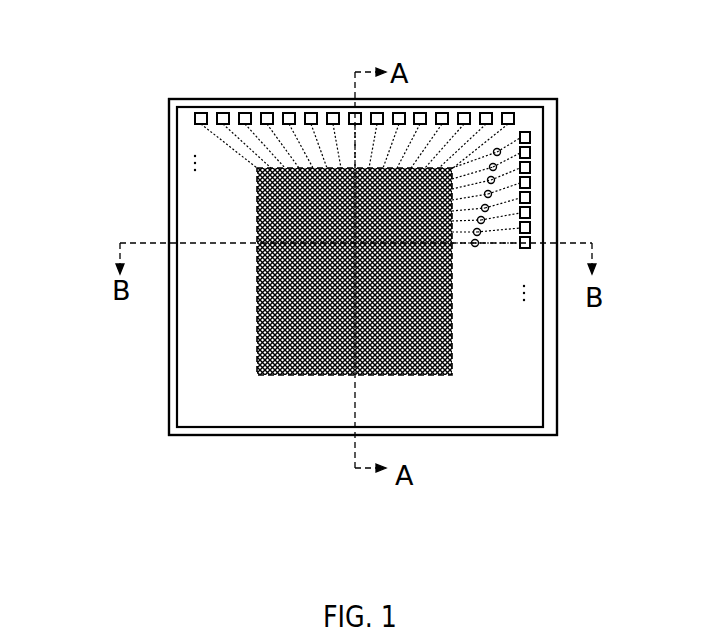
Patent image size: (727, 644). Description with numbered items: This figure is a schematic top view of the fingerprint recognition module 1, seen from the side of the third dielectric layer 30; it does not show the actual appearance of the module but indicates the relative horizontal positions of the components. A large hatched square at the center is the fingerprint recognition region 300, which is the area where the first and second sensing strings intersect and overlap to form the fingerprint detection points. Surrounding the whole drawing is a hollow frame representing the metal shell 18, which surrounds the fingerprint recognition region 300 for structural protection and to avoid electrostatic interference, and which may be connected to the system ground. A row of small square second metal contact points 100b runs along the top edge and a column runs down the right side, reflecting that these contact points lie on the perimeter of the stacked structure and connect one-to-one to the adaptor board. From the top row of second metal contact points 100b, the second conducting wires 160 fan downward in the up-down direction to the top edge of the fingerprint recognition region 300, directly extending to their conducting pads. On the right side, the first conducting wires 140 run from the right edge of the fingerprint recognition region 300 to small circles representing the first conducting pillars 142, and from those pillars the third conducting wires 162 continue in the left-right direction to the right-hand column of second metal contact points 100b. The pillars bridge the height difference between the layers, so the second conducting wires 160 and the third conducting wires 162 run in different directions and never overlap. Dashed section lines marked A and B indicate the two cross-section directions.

The fingerprint recognition module 1 is at (643, 70).
The metal shell 18 is at (558, 385).
The third dielectric layer 30 is at (218, 393).
The fingerprint recognition region 300 is at (257, 364).
The second metal contact points 100b is at (197, 114).
The second conducting wires 160 is at (213, 133).
The first conducting wires 140 is at (470, 160).
The first conducting pillars 142 is at (499, 148).
The third conducting wires 162 is at (532, 155).